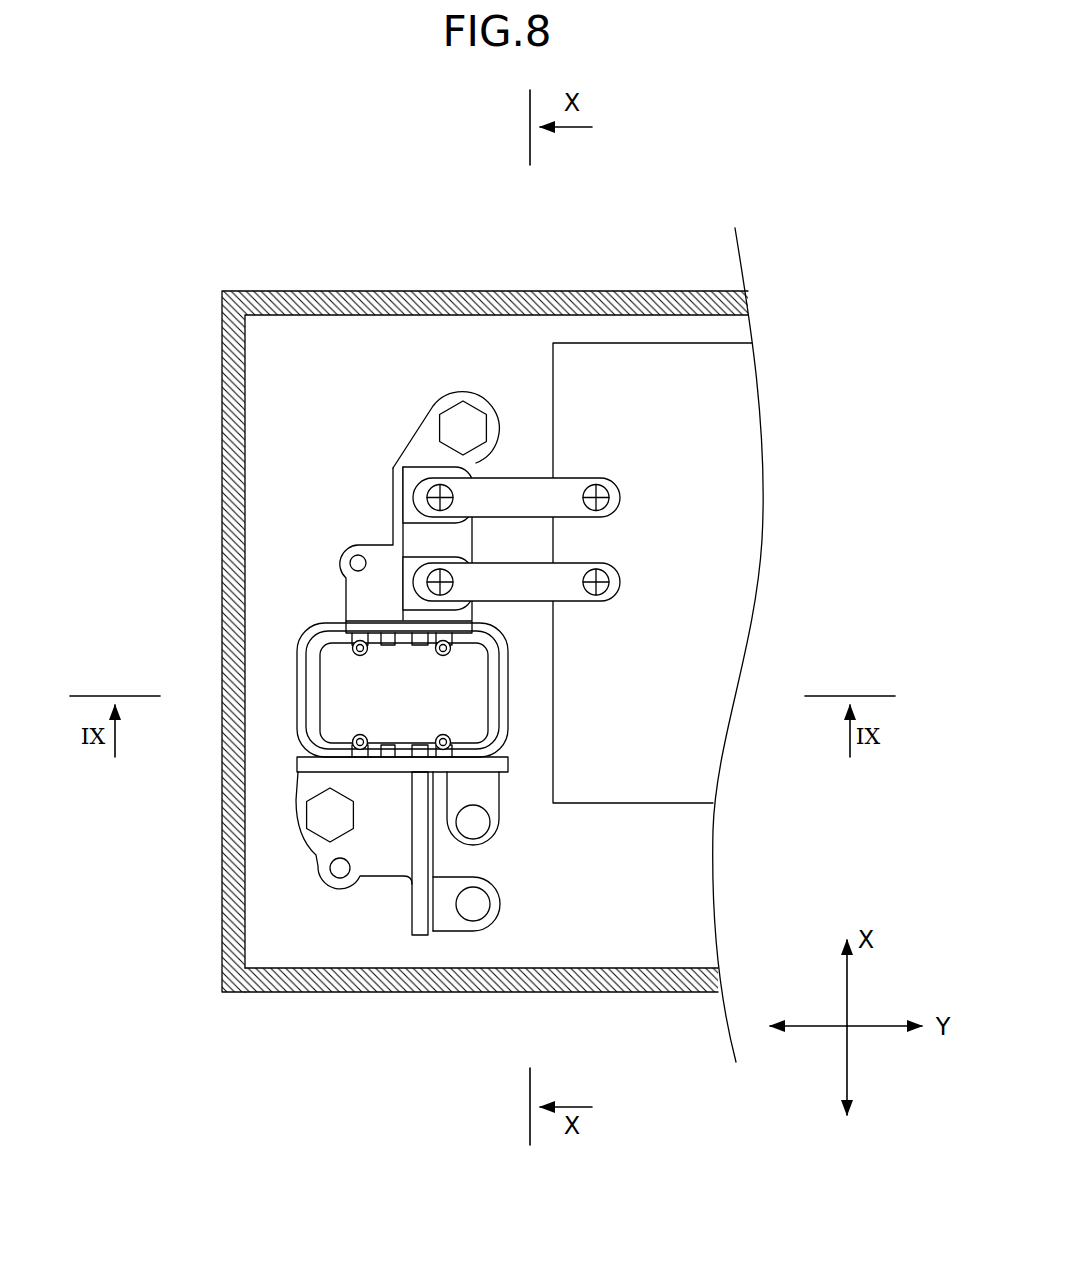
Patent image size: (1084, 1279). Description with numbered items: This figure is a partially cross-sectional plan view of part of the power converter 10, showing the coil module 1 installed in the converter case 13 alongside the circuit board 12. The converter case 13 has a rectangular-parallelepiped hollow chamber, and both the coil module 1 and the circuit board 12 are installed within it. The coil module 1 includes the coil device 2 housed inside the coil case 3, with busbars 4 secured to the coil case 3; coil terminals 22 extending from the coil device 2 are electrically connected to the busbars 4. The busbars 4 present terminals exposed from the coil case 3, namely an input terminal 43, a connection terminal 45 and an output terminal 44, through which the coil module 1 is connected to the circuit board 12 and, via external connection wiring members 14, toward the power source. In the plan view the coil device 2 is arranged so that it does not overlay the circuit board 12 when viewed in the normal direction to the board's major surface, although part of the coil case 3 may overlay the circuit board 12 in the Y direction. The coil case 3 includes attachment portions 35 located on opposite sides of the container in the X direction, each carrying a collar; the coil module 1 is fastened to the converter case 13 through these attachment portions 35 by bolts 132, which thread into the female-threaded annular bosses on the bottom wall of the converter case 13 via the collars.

The power converter 10 is at (125, 1049).
The coil module 1 is at (297, 903).
The converter case 13 is at (700, 993).
The circuit board 12 is at (692, 507).
The external connection wiring member 14 is at (527, 490).
The attachment portion 35 is at (430, 430).
The bolt 132 is at (458, 420).
The output terminal 44 is at (393, 478).
The busbar 4 is at (400, 563).
The coil case 3 is at (323, 621).
The coil device 2 is at (340, 710).
The coil terminal 22 is at (355, 657).
The connection terminal 45 is at (362, 753).
The input terminal 43 is at (487, 832).